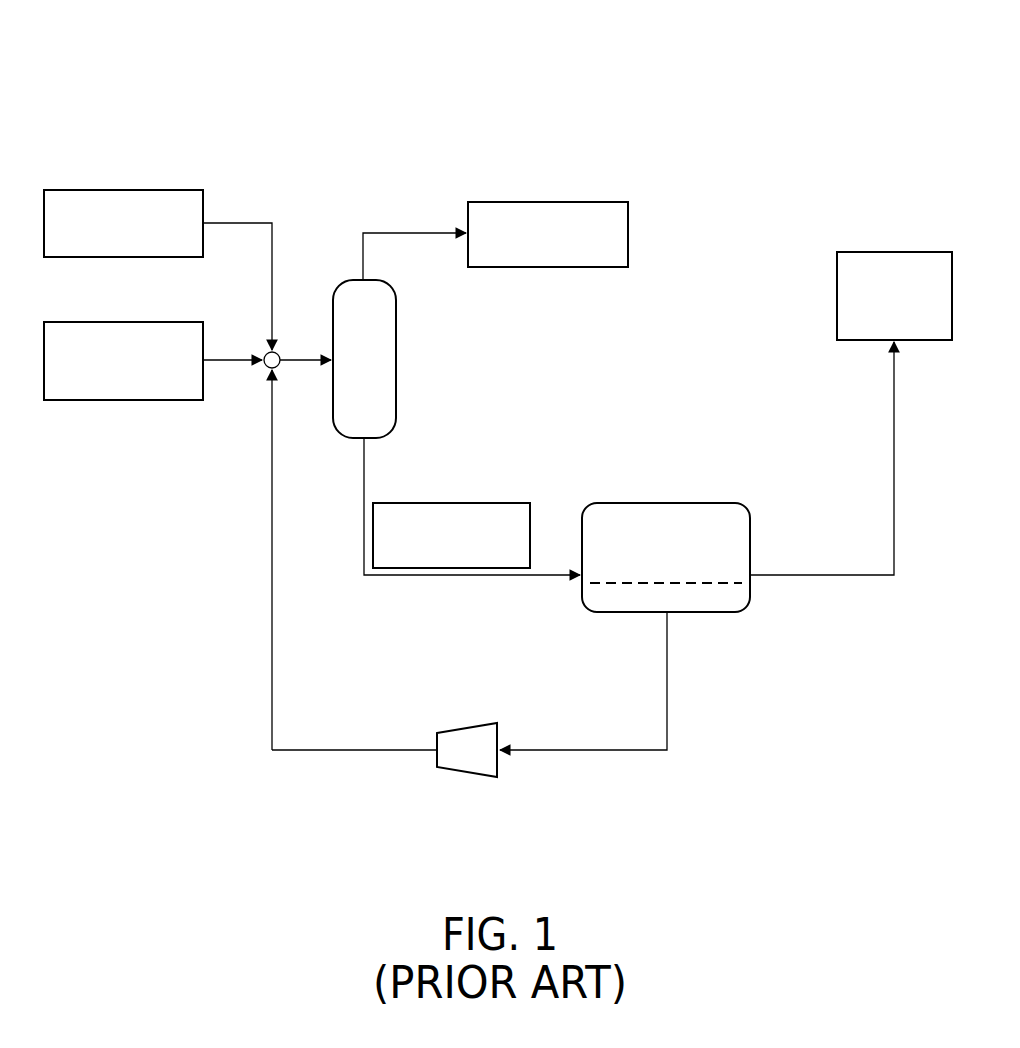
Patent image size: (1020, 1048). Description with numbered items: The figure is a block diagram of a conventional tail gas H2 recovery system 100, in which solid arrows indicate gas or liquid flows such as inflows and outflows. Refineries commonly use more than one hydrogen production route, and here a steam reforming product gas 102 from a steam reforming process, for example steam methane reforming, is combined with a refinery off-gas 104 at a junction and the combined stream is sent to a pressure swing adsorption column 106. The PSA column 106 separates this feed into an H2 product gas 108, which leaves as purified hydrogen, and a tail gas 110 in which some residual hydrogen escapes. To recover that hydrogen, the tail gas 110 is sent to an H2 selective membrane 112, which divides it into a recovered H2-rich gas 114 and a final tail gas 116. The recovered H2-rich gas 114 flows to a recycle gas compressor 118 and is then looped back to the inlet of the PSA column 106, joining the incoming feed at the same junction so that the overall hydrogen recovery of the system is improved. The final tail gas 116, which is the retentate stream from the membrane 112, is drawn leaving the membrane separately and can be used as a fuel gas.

The tail gas H2 recovery system 100 is at (870, 100).
The steam reforming product gas 102 is at (117, 190).
The refinery off-gas 104 is at (117, 322).
The pressure swing adsorption column 106 is at (396, 323).
The H2 product gas 108 is at (550, 202).
The tail gas 110 is at (500, 503).
The H2 selective membrane 112 is at (712, 612).
The recovered H2-rich gas 114 is at (593, 752).
The final tail gas 116 is at (893, 252).
The recycle gas compressor 118 is at (468, 772).